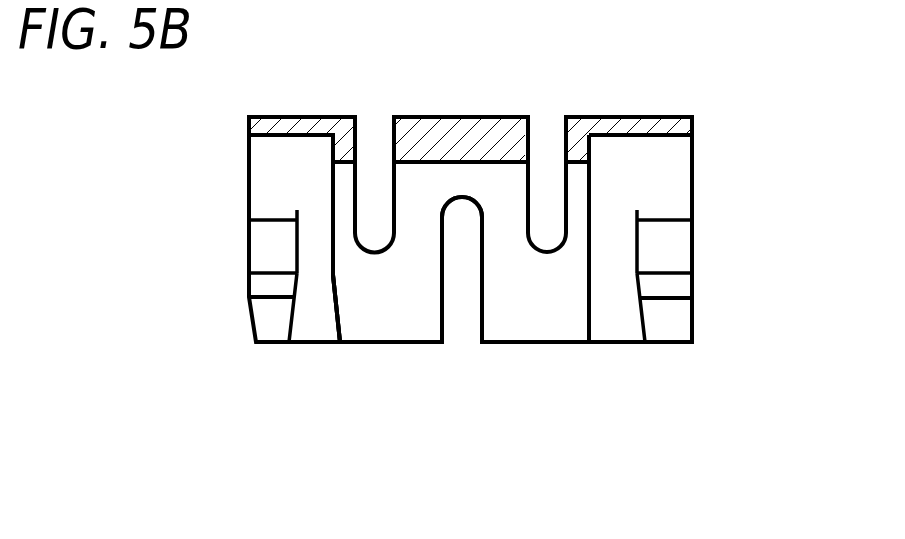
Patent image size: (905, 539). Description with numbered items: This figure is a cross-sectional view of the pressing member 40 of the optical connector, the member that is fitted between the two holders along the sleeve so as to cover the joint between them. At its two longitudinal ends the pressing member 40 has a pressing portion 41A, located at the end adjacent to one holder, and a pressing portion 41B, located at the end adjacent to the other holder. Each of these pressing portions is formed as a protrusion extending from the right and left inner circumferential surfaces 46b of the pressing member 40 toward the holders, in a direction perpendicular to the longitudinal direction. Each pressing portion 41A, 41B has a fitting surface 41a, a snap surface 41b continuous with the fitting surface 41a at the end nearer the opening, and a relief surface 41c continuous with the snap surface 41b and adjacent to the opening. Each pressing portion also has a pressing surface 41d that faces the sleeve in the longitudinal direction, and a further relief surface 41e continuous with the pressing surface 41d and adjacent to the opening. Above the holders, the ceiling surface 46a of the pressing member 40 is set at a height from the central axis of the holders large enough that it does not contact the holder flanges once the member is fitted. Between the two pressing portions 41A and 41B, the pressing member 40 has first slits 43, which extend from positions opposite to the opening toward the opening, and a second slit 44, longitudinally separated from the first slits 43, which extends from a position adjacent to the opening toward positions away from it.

The pressing member 40 is at (347, 253).
The pressing portion 41A is at (275, 228).
The pressing portion 41B is at (668, 216).
The fitting surface 41a is at (273, 255).
The snap surface 41b is at (277, 282).
The relief surface 41c is at (270, 320).
The pressing surface 41d is at (635, 245).
The relief surface 41e is at (633, 313).
The first slit 43 is at (368, 195).
The second slit 44 is at (452, 250).
The ceiling surface 46a is at (305, 153).
The inner circumferential surface 46b is at (315, 228).